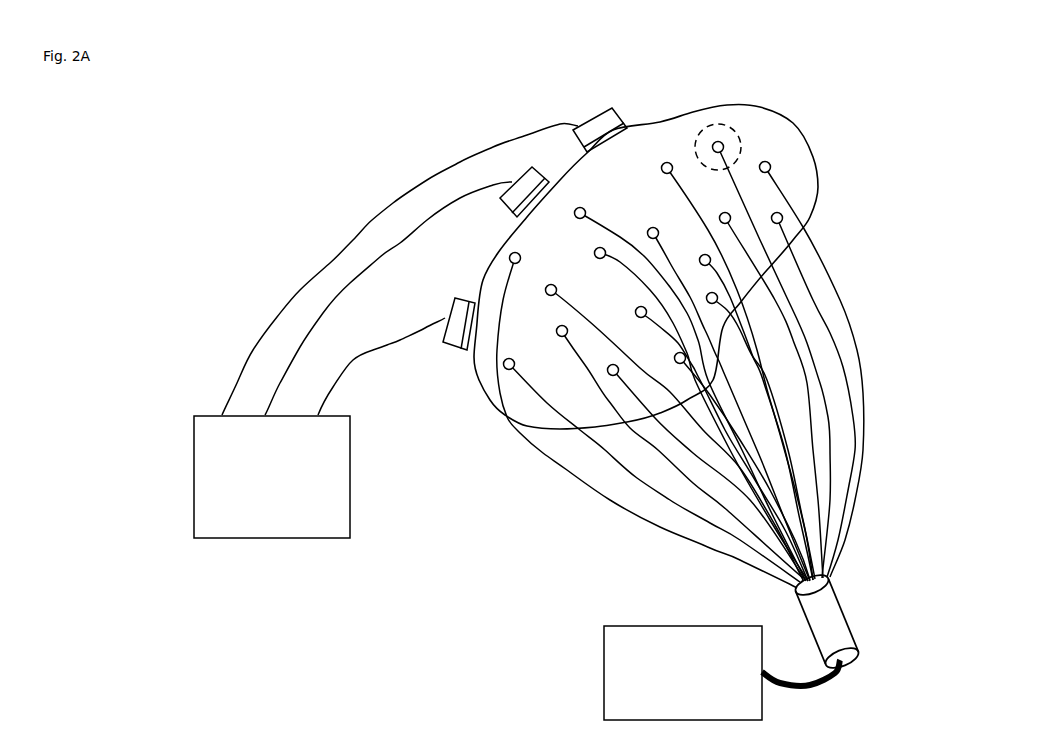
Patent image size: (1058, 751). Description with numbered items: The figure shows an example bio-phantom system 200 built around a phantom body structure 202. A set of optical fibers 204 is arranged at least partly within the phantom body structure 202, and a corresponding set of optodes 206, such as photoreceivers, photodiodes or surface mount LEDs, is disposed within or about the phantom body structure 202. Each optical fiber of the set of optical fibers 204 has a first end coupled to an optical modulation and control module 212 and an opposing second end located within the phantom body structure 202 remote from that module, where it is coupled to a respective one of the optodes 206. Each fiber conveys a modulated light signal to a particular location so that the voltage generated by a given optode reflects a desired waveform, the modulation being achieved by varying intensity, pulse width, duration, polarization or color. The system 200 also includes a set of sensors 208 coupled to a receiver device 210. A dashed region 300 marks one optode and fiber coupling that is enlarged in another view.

The bio-phantom system 200 is at (104, 99).
The phantom body structure 202 is at (807, 137).
The set of optical fibers 204 is at (893, 320).
The optodes 206 is at (664, 140).
The set of sensors 208 is at (452, 343).
The receiver device 210 is at (193, 477).
The optical modulation and control module 212 is at (604, 672).
The dashed region 300 is at (735, 131).